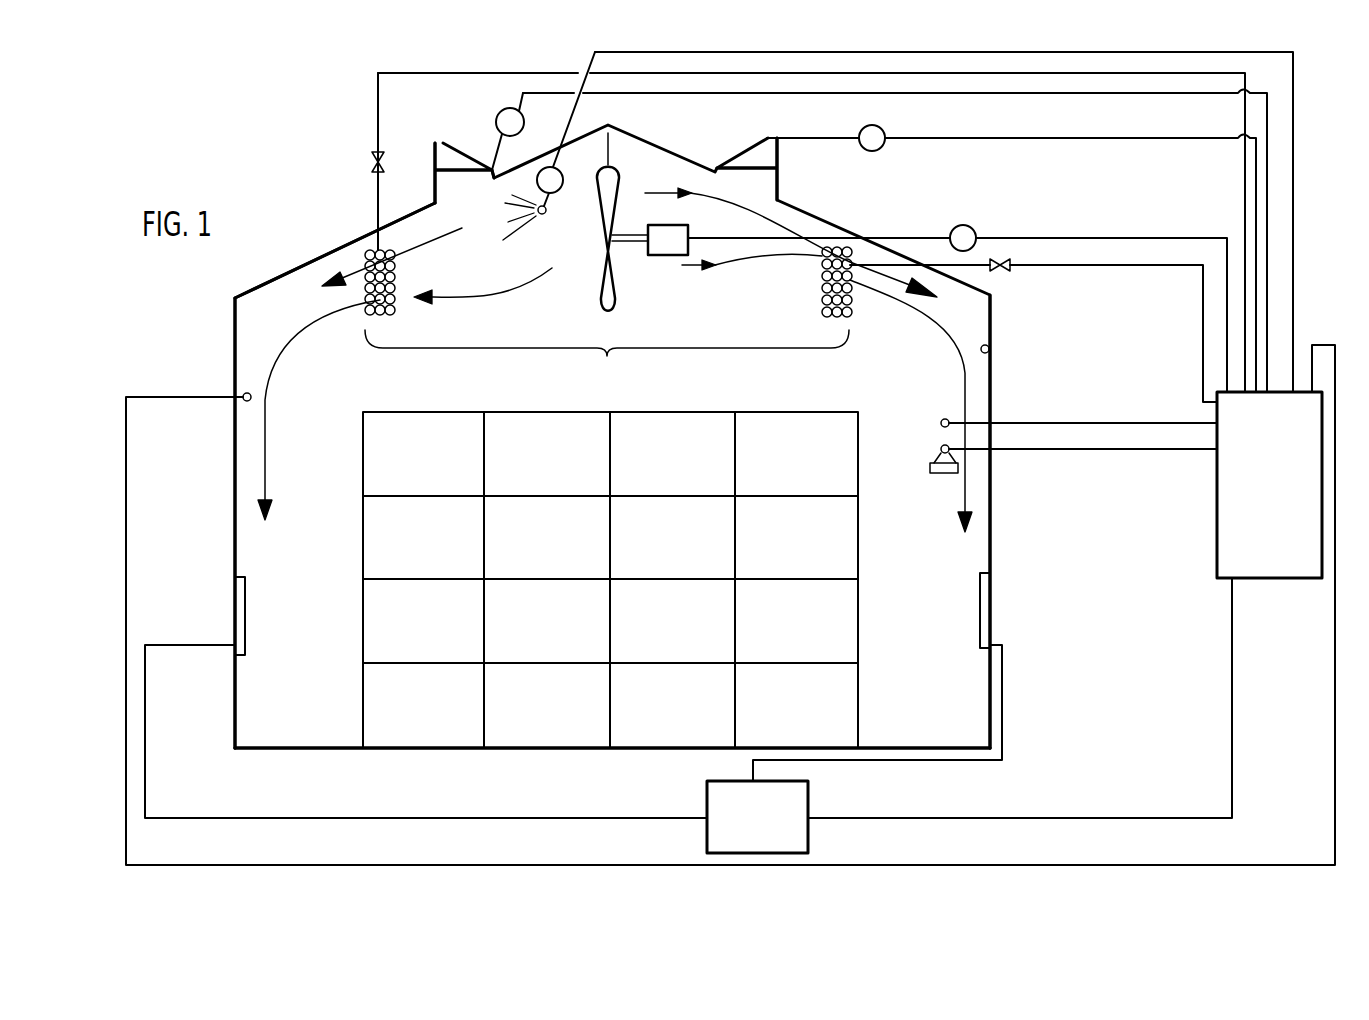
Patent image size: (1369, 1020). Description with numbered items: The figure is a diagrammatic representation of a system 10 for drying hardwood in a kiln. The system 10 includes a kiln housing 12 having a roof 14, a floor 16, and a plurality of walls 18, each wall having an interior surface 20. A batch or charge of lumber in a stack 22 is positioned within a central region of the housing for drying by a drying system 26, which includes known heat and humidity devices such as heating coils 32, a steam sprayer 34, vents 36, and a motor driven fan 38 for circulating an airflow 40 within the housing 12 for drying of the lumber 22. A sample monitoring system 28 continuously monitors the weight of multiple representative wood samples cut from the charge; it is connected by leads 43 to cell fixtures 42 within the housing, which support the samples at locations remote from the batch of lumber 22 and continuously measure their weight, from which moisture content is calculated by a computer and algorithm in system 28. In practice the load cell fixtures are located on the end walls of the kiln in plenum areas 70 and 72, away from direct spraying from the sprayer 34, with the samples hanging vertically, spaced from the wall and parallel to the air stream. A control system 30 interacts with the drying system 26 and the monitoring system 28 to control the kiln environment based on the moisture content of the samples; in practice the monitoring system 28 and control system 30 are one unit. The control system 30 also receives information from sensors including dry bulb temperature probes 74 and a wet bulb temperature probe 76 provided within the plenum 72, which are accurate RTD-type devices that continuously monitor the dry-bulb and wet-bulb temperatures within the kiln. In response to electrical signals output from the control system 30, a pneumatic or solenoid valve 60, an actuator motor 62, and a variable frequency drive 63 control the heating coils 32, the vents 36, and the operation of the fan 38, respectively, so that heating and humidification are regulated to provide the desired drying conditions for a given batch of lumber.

The system 10 is at (263, 178).
The kiln housing 12 is at (1000, 553).
The roof 14 is at (312, 262).
The floor 16 is at (333, 748).
The walls 18 is at (233, 467).
The interior surface 20 is at (237, 716).
The stack of lumber 22 is at (564, 469).
The drying system 26 is at (607, 360).
The sample monitoring system 28 is at (707, 798).
The control system 30 is at (1280, 578).
The heating coils 32 is at (396, 268).
The steam sprayer 34 is at (545, 214).
The vents 36 is at (444, 145).
The motor driven fan 38 is at (598, 291).
The airflow 40 is at (268, 358).
The cell fixtures 42 is at (236, 597).
The leads 43 is at (530, 818).
The pneumatic or solenoid valve 60 is at (374, 160).
The actuator motor 62 is at (500, 112).
The variable frequency drive 63 is at (972, 228).
The plenum area 70 is at (319, 609).
The plenum area 72 is at (922, 571).
The dry bulb temperature probes 74 is at (253, 397).
The wet bulb temperature probe 76 is at (938, 453).